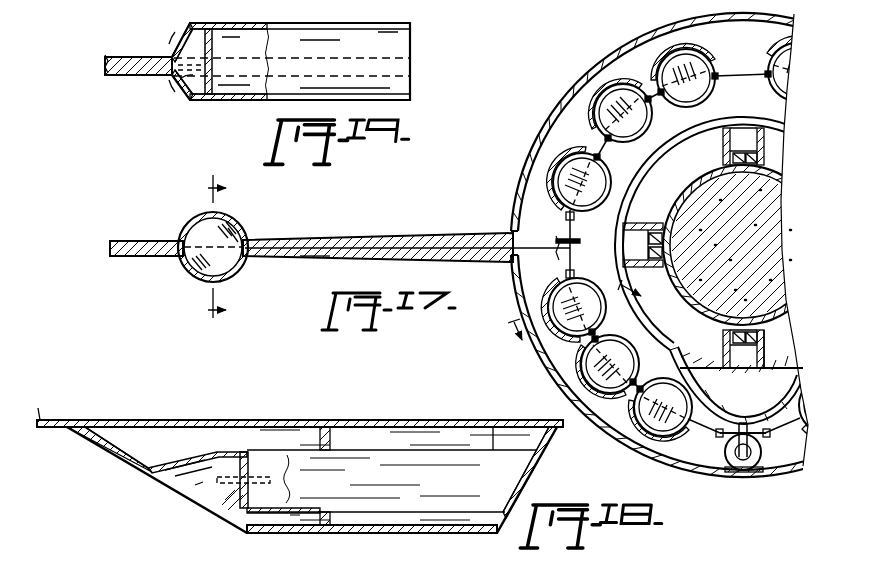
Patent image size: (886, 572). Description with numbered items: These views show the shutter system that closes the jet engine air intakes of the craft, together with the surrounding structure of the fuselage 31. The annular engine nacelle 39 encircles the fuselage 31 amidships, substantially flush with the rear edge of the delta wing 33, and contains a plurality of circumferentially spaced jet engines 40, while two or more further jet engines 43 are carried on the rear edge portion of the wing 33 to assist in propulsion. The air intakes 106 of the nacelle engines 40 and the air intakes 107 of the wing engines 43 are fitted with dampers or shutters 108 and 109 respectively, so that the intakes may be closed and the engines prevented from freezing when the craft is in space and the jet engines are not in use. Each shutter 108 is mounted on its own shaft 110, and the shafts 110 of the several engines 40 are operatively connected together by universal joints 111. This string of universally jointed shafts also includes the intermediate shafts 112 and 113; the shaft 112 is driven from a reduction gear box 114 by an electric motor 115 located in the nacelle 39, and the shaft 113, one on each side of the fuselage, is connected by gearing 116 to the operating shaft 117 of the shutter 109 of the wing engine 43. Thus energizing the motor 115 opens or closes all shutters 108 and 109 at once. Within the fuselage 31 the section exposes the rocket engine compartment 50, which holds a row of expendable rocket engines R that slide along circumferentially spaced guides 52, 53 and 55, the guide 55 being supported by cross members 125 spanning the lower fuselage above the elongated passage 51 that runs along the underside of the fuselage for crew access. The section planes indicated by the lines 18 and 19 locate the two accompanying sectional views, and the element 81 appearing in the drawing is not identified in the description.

In FIG. 19, the delta wing 33 is at (114, 76).
In FIG. 17, the delta wing 33 is at (393, 236).
In FIG. 19, the jet engine 43 is at (282, 87).
In FIG. 17, the jet engine 43 is at (192, 278).
In FIG. 19, the air intake 107 is at (195, 50).
In FIG. 19, the shutter 109 is at (196, 80).
In FIG. 17, the shutter 109 is at (225, 223).
In FIG. 18, the shutter 109 is at (270, 452).
In FIG. 19, the operating shaft 117 is at (208, 65).
In FIG. 17, the operating shaft 117 is at (300, 259).
In FIG. 17, the section line 19— 19 is at (233, 249).
In FIG. 18, the section line 18— 18 is at (587, 324).
In FIG. 18, the engine nacelle 39 is at (561, 112).
In FIG. 18, the jet engine 40 is at (550, 190).
In FIG. 18, the shaft 110 is at (713, 70).
In FIG. 18, the universal joint 111 is at (650, 90).
In FIG. 18, the shutter 108 is at (565, 175).
In FIG. 18, the rocket engine compartment 50 is at (675, 160).
In FIG. 18, the passage 51 is at (736, 385).
In FIG. 18, the guide 52 is at (722, 150).
In FIG. 18, the guide 53 is at (625, 223).
In FIG. 18, the fuselage 31 is at (733, 121).
In FIG. 18, the rocket engine R is at (678, 196).
In FIG. 18, the gearing 116 is at (558, 238).
In FIG. 18, the intermediate shaft 113 is at (568, 266).
In FIG. 18, the guide 55 is at (722, 341).
In FIG. 18, the cross member 125 is at (773, 368).
In FIG. 18, the intermediate shaft 112 is at (752, 462).
In FIG. 18, the reduction gear box 114 is at (743, 461).
In FIG. 18, the electric motor 115 is at (733, 456).
In FIG. 18, the air intake 106 is at (190, 487).
In FIG. 18, the base plate 81 is at (300, 490).